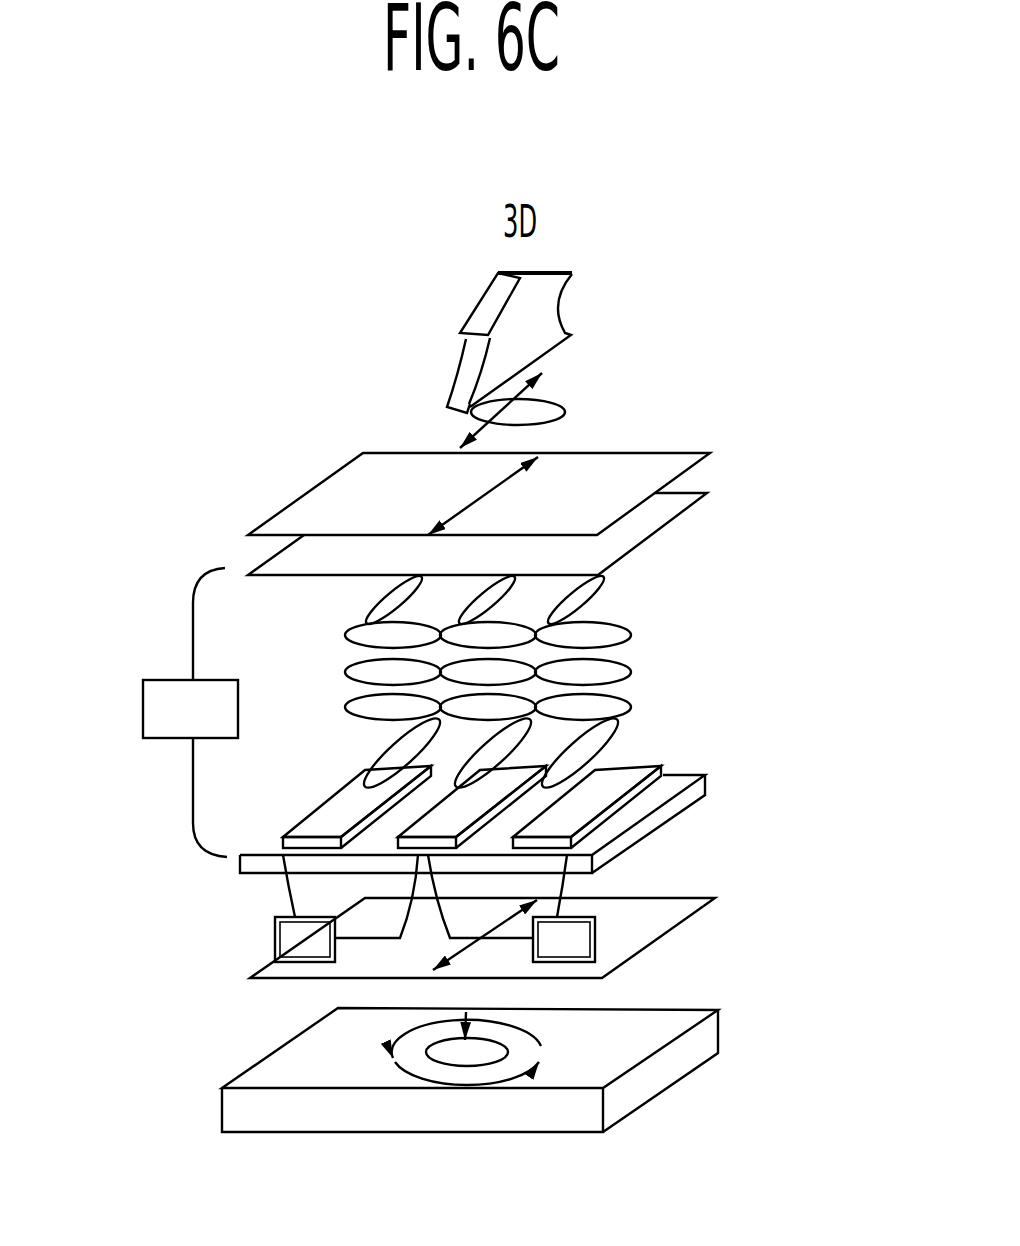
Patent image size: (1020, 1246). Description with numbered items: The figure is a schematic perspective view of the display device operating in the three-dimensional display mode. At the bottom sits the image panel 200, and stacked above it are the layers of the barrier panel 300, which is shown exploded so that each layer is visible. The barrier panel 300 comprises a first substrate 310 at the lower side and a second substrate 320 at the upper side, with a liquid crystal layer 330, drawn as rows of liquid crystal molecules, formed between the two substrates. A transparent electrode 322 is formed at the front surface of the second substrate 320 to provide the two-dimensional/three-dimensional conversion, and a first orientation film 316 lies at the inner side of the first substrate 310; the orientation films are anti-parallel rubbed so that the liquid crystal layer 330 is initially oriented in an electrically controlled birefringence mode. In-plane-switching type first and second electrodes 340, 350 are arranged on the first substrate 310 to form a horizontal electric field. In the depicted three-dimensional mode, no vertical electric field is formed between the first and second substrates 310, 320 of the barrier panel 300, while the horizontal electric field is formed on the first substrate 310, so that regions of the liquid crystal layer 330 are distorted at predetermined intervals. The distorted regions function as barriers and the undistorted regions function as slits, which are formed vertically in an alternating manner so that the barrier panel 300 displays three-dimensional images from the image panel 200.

The image panel 200 is at (243, 1108).
The barrier panel 300 is at (147, 555).
The first substrate 310 is at (654, 921).
The first orientation film 316 is at (654, 800).
The second substrate 320 is at (680, 467).
The transparent electrode 322 is at (662, 520).
The liquid crystal layer 330 is at (625, 710).
The first electrode 340 is at (640, 768).
The second electrode 350 is at (428, 842).